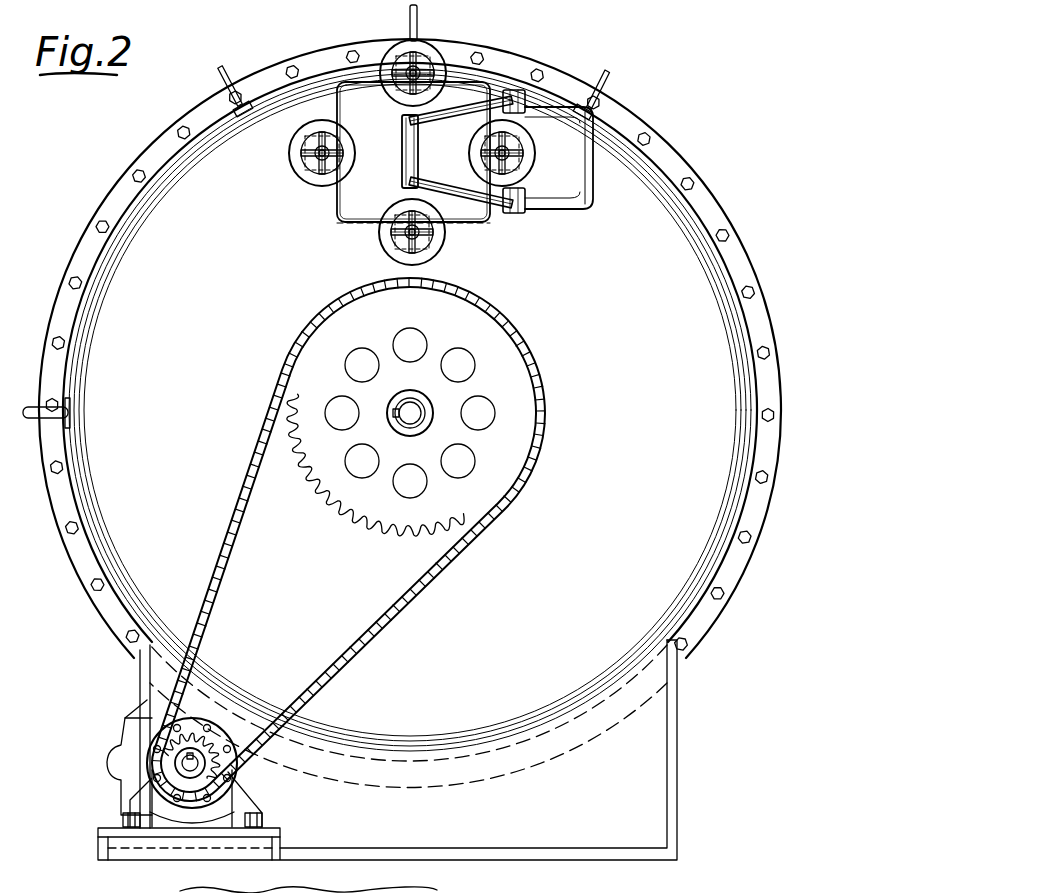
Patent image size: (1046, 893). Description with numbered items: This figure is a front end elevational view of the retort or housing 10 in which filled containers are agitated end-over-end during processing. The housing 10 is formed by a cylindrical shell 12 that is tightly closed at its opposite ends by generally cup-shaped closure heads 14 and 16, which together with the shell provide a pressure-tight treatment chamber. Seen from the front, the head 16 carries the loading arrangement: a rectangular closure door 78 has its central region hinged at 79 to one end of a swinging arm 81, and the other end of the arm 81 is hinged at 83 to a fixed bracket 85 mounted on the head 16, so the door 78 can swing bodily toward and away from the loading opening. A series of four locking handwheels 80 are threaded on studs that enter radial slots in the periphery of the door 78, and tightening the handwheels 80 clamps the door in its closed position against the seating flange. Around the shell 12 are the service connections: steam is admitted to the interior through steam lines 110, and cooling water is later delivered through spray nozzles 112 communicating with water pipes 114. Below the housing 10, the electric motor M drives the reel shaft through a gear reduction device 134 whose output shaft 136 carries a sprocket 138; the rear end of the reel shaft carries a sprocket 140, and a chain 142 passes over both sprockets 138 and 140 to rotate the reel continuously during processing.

The retort or housing 10 is at (147, 127).
The cylindrical shell 12 is at (212, 135).
The rear closure head 14 is at (373, 766).
The front closure head 16 is at (645, 208).
The closure door 78 is at (360, 207).
The hinge 79 is at (428, 112).
The locking handwheels 80 is at (389, 96).
The swinging arm 81 is at (439, 151).
The hinge 83 is at (508, 214).
The fixed bracket 85 is at (557, 203).
The steam lines 110 is at (34, 418).
The spray nozzles 112 is at (250, 102).
The water pipes 114 is at (240, 78).
The gear reduction device 134 is at (138, 718).
The output shaft 136 is at (222, 770).
The sprocket 138 is at (240, 735).
The sprocket 140 is at (340, 505).
The chain 142 is at (363, 642).
The electric motor M is at (130, 723).